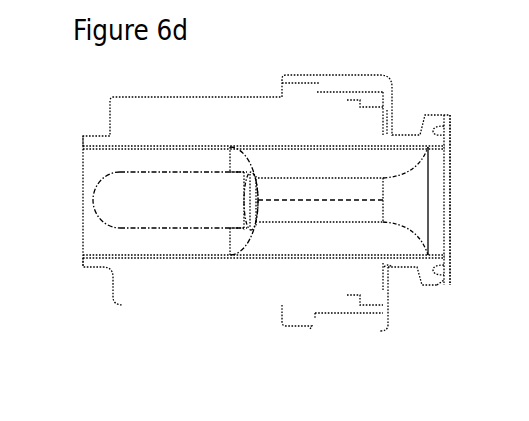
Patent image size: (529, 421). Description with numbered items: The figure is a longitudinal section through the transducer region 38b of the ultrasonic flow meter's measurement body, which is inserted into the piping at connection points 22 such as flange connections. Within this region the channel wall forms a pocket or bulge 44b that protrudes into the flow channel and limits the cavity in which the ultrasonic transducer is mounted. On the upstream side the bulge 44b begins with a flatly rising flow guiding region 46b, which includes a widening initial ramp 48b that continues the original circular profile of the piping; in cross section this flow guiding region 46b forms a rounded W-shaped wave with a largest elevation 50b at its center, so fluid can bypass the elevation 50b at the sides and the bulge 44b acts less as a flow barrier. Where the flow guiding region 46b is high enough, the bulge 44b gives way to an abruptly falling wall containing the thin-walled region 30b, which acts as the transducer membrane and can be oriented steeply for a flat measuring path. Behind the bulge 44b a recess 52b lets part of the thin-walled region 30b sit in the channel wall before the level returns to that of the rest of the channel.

The transducer region 38b is at (399, 47).
The bulge 44b is at (277, 168).
The connection points 22 is at (433, 272).
The initial ramp 48b is at (403, 212).
The flow guiding region 46b is at (290, 235).
The recess 52b is at (167, 209).
The thin-walled region 30b is at (250, 207).
The elevation 50b is at (248, 208).